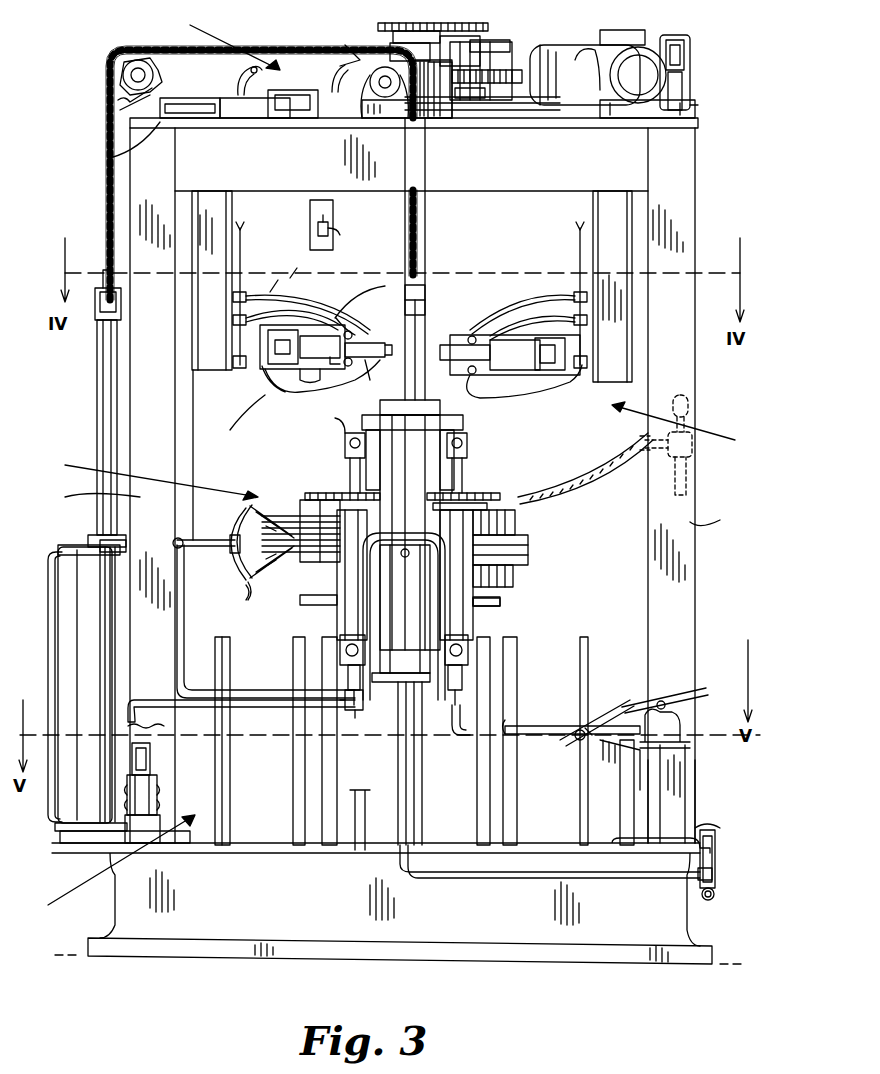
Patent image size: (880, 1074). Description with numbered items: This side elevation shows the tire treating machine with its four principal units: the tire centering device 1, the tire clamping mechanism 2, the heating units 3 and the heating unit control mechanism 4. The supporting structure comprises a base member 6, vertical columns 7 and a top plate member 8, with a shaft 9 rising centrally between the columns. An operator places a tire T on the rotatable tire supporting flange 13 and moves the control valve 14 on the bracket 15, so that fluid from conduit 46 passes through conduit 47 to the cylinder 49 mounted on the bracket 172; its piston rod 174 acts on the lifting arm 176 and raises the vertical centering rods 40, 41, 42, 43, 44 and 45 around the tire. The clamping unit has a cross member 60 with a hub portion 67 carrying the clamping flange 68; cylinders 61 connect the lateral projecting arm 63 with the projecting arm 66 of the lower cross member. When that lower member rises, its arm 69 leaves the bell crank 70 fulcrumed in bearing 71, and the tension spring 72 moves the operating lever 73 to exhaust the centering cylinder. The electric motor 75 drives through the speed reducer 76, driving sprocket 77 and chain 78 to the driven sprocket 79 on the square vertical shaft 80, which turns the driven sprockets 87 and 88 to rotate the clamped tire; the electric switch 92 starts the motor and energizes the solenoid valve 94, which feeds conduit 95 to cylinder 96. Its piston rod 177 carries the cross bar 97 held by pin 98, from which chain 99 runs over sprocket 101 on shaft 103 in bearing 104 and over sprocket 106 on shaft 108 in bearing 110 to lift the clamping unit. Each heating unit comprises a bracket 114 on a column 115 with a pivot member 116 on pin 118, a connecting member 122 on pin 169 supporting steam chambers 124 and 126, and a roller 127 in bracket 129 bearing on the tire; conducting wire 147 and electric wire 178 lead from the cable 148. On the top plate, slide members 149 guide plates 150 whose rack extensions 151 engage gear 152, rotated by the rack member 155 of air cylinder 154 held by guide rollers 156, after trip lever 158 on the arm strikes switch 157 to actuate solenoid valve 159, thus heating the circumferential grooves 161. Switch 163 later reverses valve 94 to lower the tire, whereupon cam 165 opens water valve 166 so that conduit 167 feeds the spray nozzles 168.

The tire centering device 1 is at (366, 880).
The tire clamping mechanism 2 is at (150, 477).
The heating units 3 is at (688, 445).
The heating unit control mechanism 4 is at (226, 41).
The base member 6 is at (232, 940).
The vertical columns 7 is at (66, 497).
The top plate member 8 is at (110, 158).
The shaft 9 is at (440, 276).
The tire supporting flange 13 is at (513, 576).
The control valve 14 is at (675, 730).
The bracket 15 is at (695, 805).
The vertical centering rod 40 is at (490, 820).
The vertical centering rod 41 is at (293, 822).
The vertical centering rod 42 is at (230, 790).
The vertical centering rod 43 is at (330, 760).
The vertical centering rod 44 is at (515, 786).
The vertical centering rod 45 is at (620, 760).
The conduit 46 is at (715, 878).
The conduit 47 is at (708, 900).
The cylinder 49 is at (405, 640).
The cross member 60 is at (440, 422).
The cylinders 61 is at (455, 526).
The lateral projecting arm 63 is at (467, 440).
The projecting arm 66 is at (468, 645).
The hub portion 67 is at (463, 417).
The clamping flange 68 is at (312, 515).
The arm 69 is at (462, 670).
The bell crank 70 is at (532, 734).
The bearing 71 is at (575, 738).
The tension spring 72 is at (615, 748).
The operating lever 73 is at (645, 700).
The electric motor 75 is at (530, 38).
The speed reducer 76 is at (490, 52).
The driving sprocket 77 is at (492, 40).
The chain 78 is at (465, 36).
The driven sprocket 79 is at (405, 31).
The vertical shaft 80 is at (410, 20).
The driven sprocket 87 is at (488, 493).
The driven sprocket 88 is at (500, 601).
The electric switch 92 is at (453, 735).
The solenoid valve 94 is at (157, 782).
The conduit 95 is at (48, 643).
The cylinder 96 is at (75, 604).
The cross bar 97 is at (97, 325).
The pin 98 is at (122, 305).
The chain 99 is at (106, 203).
The sprocket 101 is at (117, 98).
The shaft 103 is at (123, 72).
The bearing 104 is at (150, 98).
The sprocket 106 is at (335, 60).
The shaft 108 is at (385, 64).
The bearing 110 is at (378, 110).
The bracket 114 is at (282, 370).
The column 115 is at (210, 372).
The pivot member 116 is at (298, 368).
The pin 118 is at (300, 318).
The connecting member 122 is at (322, 370).
The steam chamber 124 is at (338, 338).
The steam chamber 126 is at (368, 362).
The roller 127 is at (425, 312).
The bracket 129 is at (385, 343).
The conducting wire 147 is at (282, 285).
The electrically conducting cable 148 is at (240, 252).
The slide member 149 is at (255, 110).
The plate 150 is at (210, 115).
The rack extension 151 is at (320, 98).
The gear 152 is at (430, 118).
The air cylinder 154 is at (592, 45).
The rack member 155 is at (495, 95).
The guide roller 156 is at (460, 105).
The electric switch 157 is at (316, 228).
The trip lever 158 is at (343, 430).
The solenoid valve 159 is at (690, 88).
The circumferential grooves 161 is at (528, 548).
The switch 163 is at (285, 105).
The cam 165 is at (340, 670).
The water valve 166 is at (345, 695).
The conduit 167 is at (186, 603).
The spray nozzle 168 is at (252, 588).
The pin 169 is at (345, 280).
The bracket 172 is at (368, 850).
The piston rod 174 is at (400, 718).
The lifting arm 176 is at (395, 868).
The piston rod 177 is at (97, 433).
The electric wire 178 is at (265, 370).
The tire T is at (585, 468).